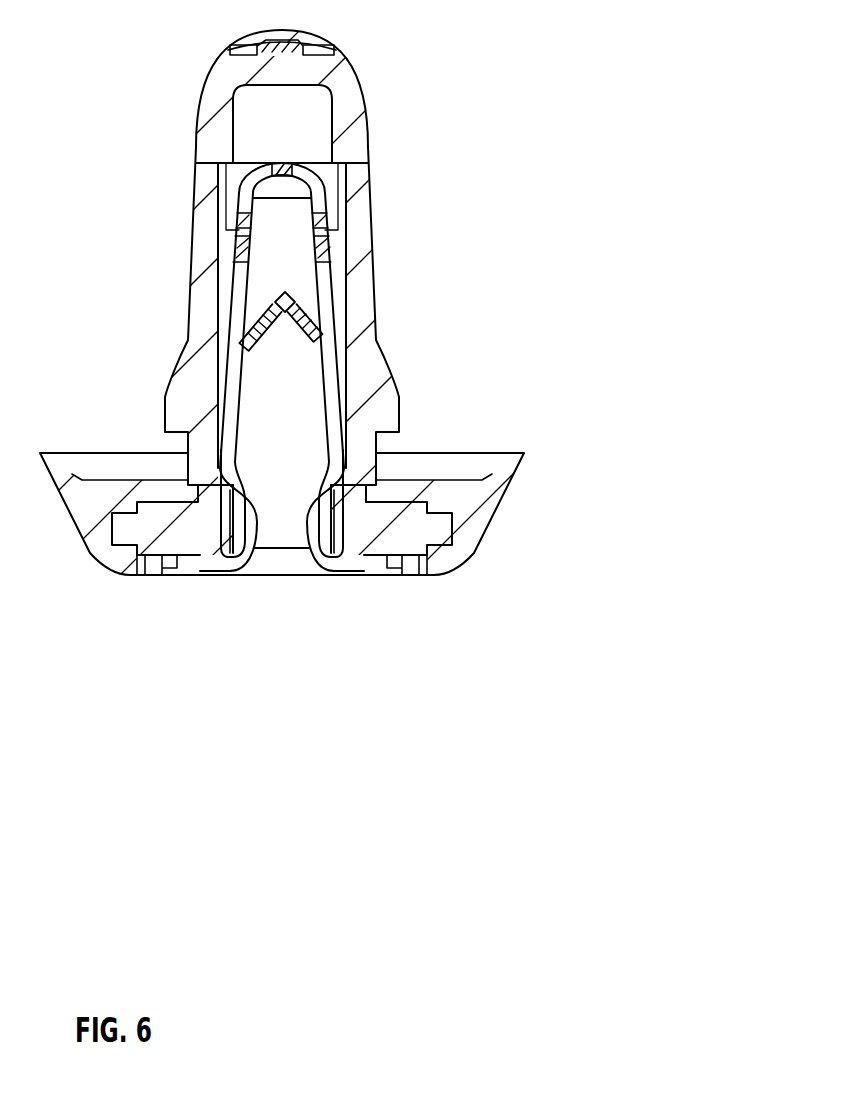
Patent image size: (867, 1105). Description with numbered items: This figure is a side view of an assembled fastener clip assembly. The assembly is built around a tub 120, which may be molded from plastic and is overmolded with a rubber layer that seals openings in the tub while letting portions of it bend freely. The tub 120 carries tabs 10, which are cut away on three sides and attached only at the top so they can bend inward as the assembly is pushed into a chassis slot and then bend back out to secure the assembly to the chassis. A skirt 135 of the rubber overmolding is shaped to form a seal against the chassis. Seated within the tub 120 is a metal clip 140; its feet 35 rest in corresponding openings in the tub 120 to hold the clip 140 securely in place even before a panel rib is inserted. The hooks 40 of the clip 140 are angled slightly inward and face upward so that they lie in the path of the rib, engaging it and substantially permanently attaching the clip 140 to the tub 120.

The tabs 10 is at (388, 412).
The feet 35 is at (238, 560).
The hooks 40 is at (297, 302).
The tub 120 is at (345, 103).
The skirt 135 is at (493, 483).
The metal clip 140 is at (340, 462).